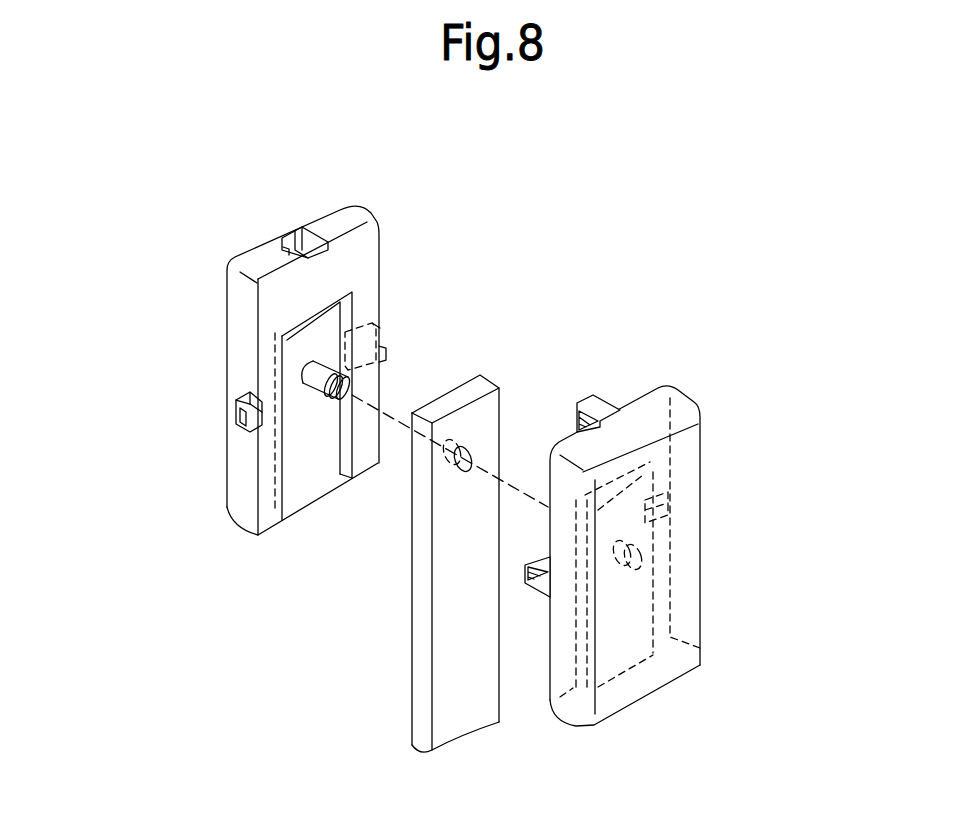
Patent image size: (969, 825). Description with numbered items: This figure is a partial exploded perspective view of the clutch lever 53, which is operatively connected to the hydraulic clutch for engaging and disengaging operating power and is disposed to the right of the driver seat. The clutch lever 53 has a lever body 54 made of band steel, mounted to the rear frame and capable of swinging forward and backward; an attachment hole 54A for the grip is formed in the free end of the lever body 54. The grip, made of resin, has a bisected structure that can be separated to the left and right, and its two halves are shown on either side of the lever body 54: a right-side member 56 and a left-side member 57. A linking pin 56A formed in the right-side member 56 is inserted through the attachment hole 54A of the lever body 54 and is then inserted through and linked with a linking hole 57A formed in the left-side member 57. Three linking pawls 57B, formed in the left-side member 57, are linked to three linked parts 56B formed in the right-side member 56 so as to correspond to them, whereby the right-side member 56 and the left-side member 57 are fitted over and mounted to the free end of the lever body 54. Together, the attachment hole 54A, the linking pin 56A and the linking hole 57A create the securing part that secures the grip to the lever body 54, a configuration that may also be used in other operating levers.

The clutch lever 53 is at (608, 288).
The lever body 54 is at (413, 590).
The attachment hole 54A is at (472, 453).
The right-side member 56 is at (227, 293).
The linking pin 56A is at (300, 388).
The linked parts 56B is at (295, 232).
The left-side member 57 is at (700, 415).
The linking hole 57A is at (653, 567).
The linking pawls 57B is at (597, 400).